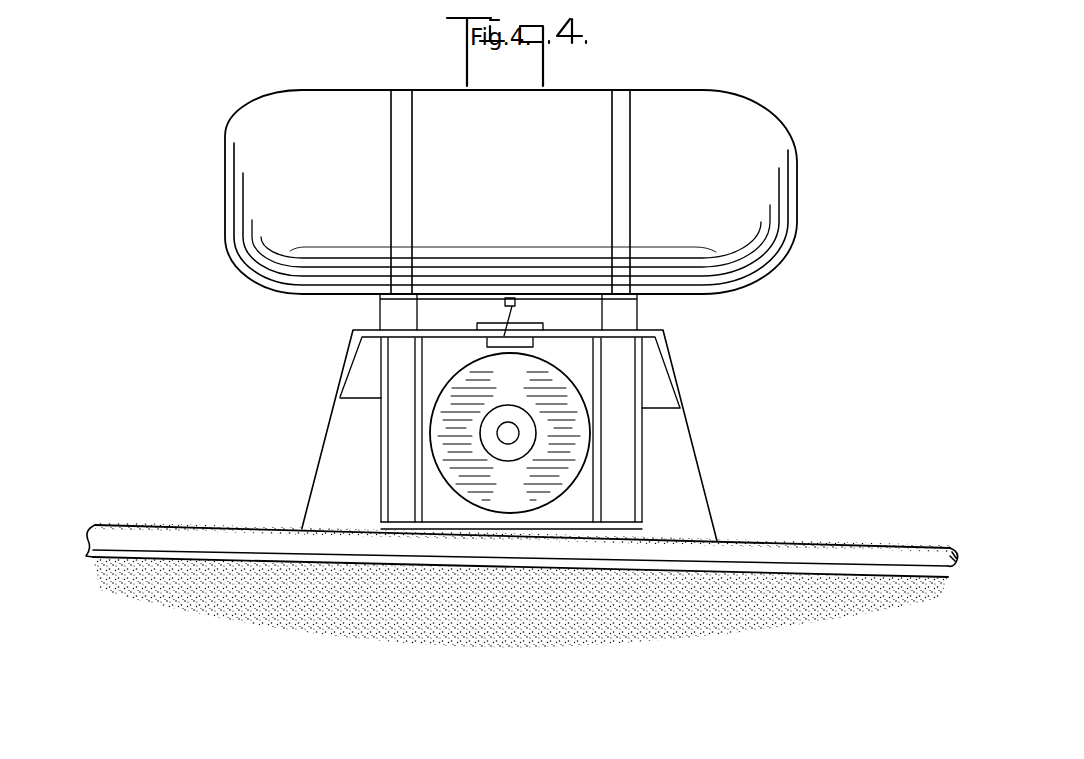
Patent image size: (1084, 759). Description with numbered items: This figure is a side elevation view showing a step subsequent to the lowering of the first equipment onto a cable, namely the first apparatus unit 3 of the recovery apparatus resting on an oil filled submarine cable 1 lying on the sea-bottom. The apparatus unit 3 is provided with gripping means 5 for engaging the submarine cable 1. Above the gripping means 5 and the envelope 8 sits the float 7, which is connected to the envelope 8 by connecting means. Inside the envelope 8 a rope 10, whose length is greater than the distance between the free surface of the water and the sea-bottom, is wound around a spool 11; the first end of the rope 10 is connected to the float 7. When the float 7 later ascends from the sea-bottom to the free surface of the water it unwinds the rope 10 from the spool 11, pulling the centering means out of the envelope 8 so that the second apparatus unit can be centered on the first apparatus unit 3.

The submarine cable 1 is at (268, 542).
The apparatus unit 3 is at (783, 100).
The gripping means 5 is at (405, 488).
The float 7 is at (457, 104).
The envelope 8 is at (673, 378).
The rope 10 is at (508, 312).
The spool 11 is at (568, 455).